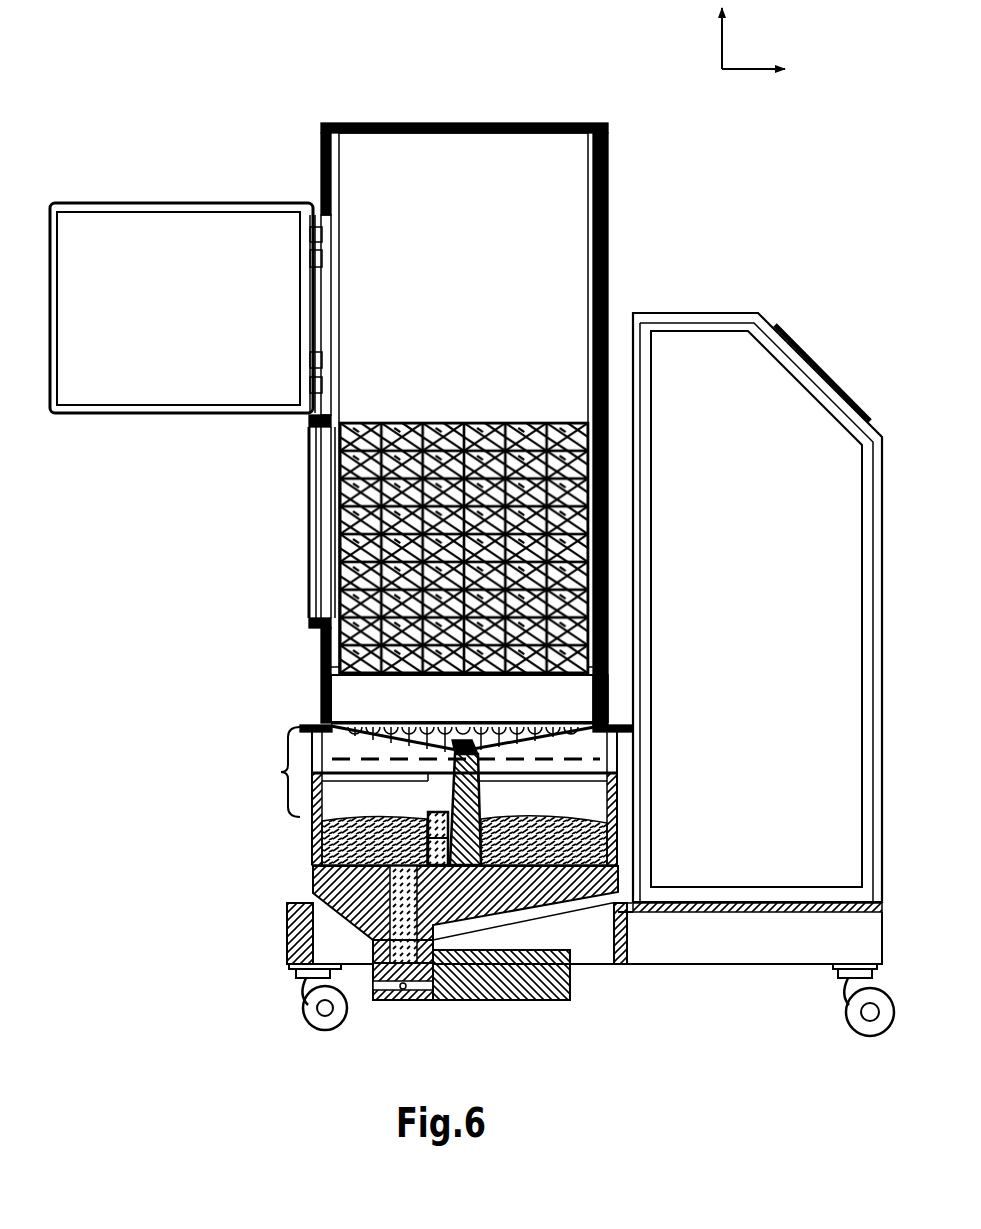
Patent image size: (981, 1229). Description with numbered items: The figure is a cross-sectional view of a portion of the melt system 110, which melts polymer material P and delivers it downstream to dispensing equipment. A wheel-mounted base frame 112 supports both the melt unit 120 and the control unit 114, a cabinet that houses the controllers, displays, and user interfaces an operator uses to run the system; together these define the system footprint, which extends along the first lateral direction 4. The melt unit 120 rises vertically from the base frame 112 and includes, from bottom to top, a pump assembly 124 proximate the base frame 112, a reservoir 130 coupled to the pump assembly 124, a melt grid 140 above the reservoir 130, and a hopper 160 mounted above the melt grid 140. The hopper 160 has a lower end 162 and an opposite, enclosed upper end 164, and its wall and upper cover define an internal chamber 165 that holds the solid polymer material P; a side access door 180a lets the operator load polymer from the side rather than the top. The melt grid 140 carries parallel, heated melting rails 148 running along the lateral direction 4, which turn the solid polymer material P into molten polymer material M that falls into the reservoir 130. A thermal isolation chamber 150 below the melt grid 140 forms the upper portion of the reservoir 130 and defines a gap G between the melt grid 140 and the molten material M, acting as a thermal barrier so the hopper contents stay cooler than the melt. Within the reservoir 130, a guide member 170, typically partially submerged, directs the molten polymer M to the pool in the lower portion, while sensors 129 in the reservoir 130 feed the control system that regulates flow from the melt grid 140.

The melt system 110 is at (192, 128).
The first lateral direction 4 is at (787, 69).
The melt unit 120 is at (418, 120).
The upper end 164 is at (513, 120).
The internal chamber 165 is at (530, 272).
The polymer material P is at (440, 428).
The melting rails 148 is at (478, 709).
The lower end 162 is at (620, 655).
The melt grid 140 is at (623, 694).
The thermal isolation chamber 150 is at (619, 767).
The gap G is at (278, 772).
The molten polymer material M is at (613, 826).
The guide member 170 is at (484, 807).
The sensors 129 is at (430, 813).
The reservoir 130 is at (309, 868).
The pump assembly 124 is at (492, 1010).
The base frame 112 is at (282, 934).
The hopper 160 is at (612, 438).
The control unit 114 is at (728, 529).
The side access door 180a is at (160, 413).